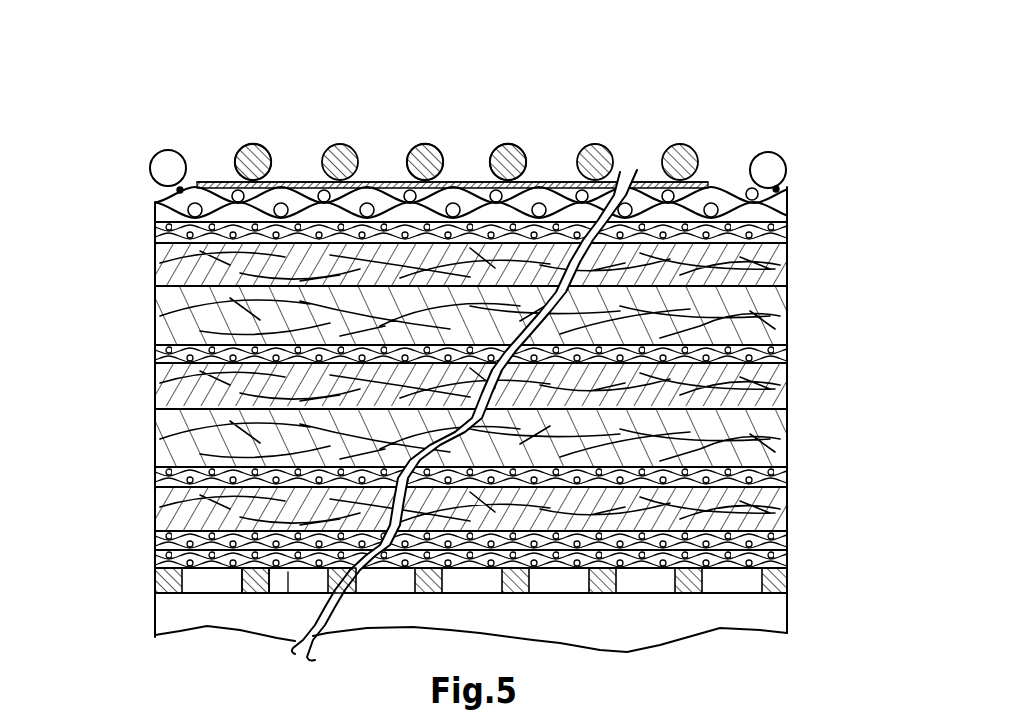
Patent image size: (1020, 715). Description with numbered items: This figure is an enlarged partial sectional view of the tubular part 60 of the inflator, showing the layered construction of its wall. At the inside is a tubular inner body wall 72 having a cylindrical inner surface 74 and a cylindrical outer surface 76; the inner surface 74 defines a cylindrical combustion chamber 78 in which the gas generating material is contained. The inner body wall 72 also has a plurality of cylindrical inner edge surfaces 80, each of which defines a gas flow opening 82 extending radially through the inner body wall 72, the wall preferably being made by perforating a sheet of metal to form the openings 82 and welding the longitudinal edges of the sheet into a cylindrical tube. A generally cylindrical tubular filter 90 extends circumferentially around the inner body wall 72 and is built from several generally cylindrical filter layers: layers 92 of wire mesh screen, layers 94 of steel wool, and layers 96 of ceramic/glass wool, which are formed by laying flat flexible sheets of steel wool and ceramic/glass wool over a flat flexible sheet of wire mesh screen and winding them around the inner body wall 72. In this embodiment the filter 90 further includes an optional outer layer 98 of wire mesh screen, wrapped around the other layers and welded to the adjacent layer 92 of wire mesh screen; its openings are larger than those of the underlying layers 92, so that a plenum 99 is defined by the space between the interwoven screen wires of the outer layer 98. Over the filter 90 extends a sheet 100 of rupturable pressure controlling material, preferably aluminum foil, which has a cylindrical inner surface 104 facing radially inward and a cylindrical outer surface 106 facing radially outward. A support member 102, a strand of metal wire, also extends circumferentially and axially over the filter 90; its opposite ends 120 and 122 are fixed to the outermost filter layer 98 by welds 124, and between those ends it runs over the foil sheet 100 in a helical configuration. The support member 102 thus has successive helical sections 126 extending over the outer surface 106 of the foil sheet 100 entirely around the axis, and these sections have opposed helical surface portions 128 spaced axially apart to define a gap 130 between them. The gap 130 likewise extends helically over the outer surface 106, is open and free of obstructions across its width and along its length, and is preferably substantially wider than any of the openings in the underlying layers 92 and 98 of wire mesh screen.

The tubular part 60 is at (150, 56).
The inner body wall 72 is at (142, 580).
The inner surface 74 is at (255, 594).
The outer surface 76 is at (288, 594).
The combustion chamber 78 is at (404, 623).
The inner edge surfaces 80 is at (528, 573).
The gas flow opening 82 is at (562, 578).
The filter 90 is at (808, 440).
The layers of wire mesh screen 92 is at (155, 232).
The layers of steel wool 94 is at (155, 262).
The layers of ceramic/glass wool 96 is at (155, 317).
The outer layer 98 is at (168, 198).
The plenum 99 is at (243, 194).
The sheet of rupturable pressure controlling material 100 is at (285, 176).
The support member 102 is at (261, 140).
The inner surface 104 is at (305, 193).
The outer surface 106 is at (377, 182).
The end 120 is at (168, 150).
The end 122 is at (765, 152).
The welds 124 is at (174, 190).
The helical sections 126 is at (408, 166).
The helical surface portions 128 is at (446, 166).
The gap 130 is at (465, 156).